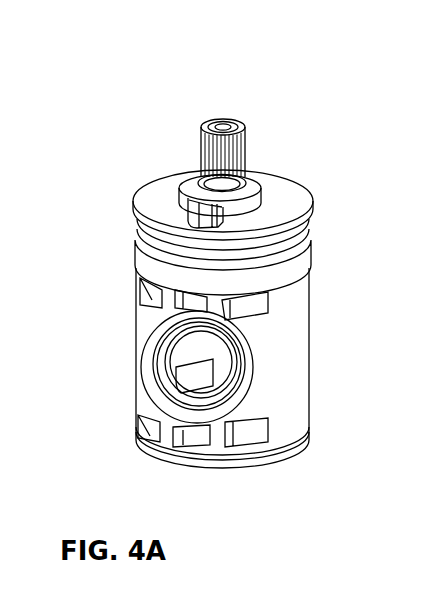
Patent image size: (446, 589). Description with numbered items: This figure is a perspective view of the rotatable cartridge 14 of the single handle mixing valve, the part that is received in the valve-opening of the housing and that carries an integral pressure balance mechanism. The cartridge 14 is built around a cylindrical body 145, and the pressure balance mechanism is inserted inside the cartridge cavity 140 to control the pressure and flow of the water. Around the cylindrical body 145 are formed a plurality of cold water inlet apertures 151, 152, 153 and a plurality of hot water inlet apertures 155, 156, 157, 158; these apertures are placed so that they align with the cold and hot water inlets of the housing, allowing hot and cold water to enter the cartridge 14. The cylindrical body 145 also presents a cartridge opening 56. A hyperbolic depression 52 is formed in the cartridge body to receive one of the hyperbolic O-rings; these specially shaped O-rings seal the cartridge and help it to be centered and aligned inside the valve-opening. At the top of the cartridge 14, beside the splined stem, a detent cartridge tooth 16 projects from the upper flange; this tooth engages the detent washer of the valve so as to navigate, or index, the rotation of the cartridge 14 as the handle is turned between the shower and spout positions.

The cartridge 14 is at (105, 80).
The detent cartridge tooth 16 is at (200, 211).
The hyperbolic depression 52 is at (197, 427).
The cartridge opening 56 is at (171, 380).
The cartridge cavity 140 is at (190, 350).
The cylindrical body 145 is at (297, 403).
The cold water inlet aperture 151 is at (140, 301).
The cold water inlet aperture 152 is at (183, 293).
The cold water inlet aperture 153 is at (250, 303).
The hot water inlet aperture 155 is at (140, 428).
The hot water inlet aperture 156 is at (183, 442).
The hot water inlet aperture 157 is at (247, 437).
The hot water inlet aperture 158 is at (188, 374).